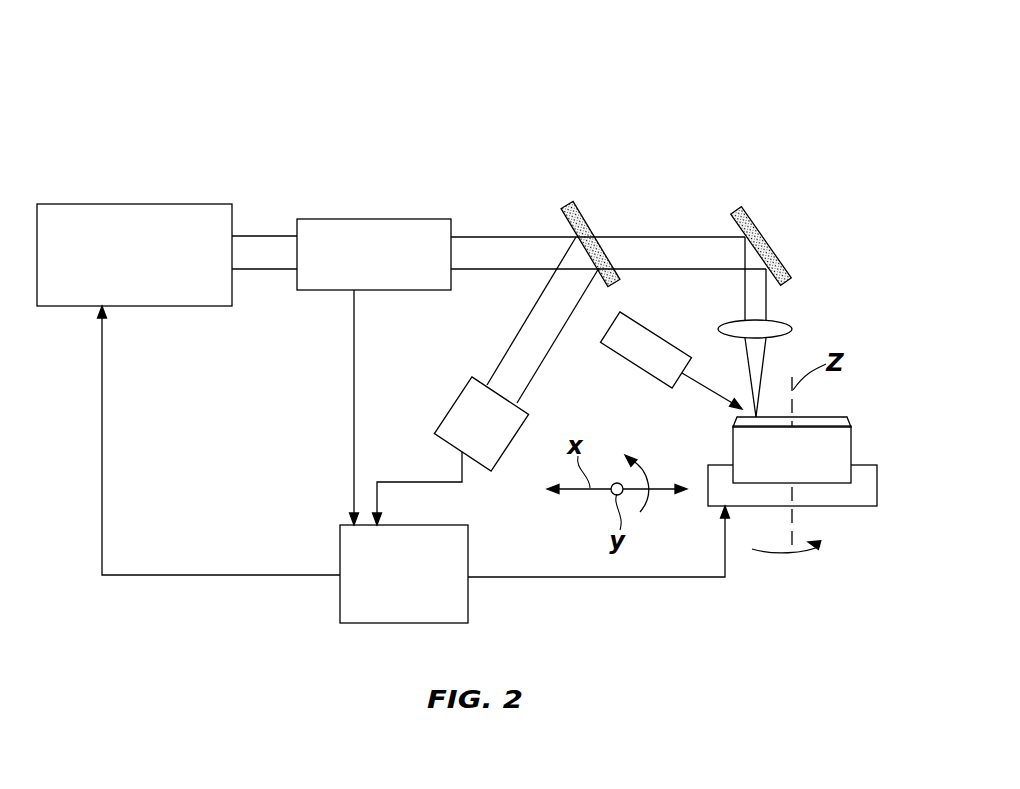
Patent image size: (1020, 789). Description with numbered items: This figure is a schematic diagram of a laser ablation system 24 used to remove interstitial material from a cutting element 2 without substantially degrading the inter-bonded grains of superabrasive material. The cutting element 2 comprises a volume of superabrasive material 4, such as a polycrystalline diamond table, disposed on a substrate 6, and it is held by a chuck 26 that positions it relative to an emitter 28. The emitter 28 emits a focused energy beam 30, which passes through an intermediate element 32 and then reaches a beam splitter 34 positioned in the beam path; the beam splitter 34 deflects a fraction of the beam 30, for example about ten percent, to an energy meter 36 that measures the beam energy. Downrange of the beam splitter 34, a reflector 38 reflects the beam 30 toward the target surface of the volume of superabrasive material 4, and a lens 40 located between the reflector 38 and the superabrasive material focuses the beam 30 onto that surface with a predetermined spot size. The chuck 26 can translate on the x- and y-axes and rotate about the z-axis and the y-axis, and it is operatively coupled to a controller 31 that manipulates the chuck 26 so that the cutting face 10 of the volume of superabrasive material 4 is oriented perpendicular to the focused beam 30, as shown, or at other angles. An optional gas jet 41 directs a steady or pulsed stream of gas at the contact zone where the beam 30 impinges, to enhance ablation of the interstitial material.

The laser ablation system 24 is at (98, 120).
The emitter 28 is at (119, 269).
The focused energy beam 30 is at (258, 247).
The beam conditioning optics 32 is at (359, 269).
The beam splitter 34 is at (567, 206).
The energy meter 36 is at (466, 437).
The reflector 38 is at (732, 212).
The lens 40 is at (792, 329).
The gas jet 41 is at (635, 348).
The controller 31 is at (389, 589).
The chuck 26 is at (860, 501).
The substrate 6 is at (838, 456).
The volume of superabrasive material 4 is at (849, 420).
The cutting face 10 is at (828, 417).
The cutting element 2 is at (706, 442).